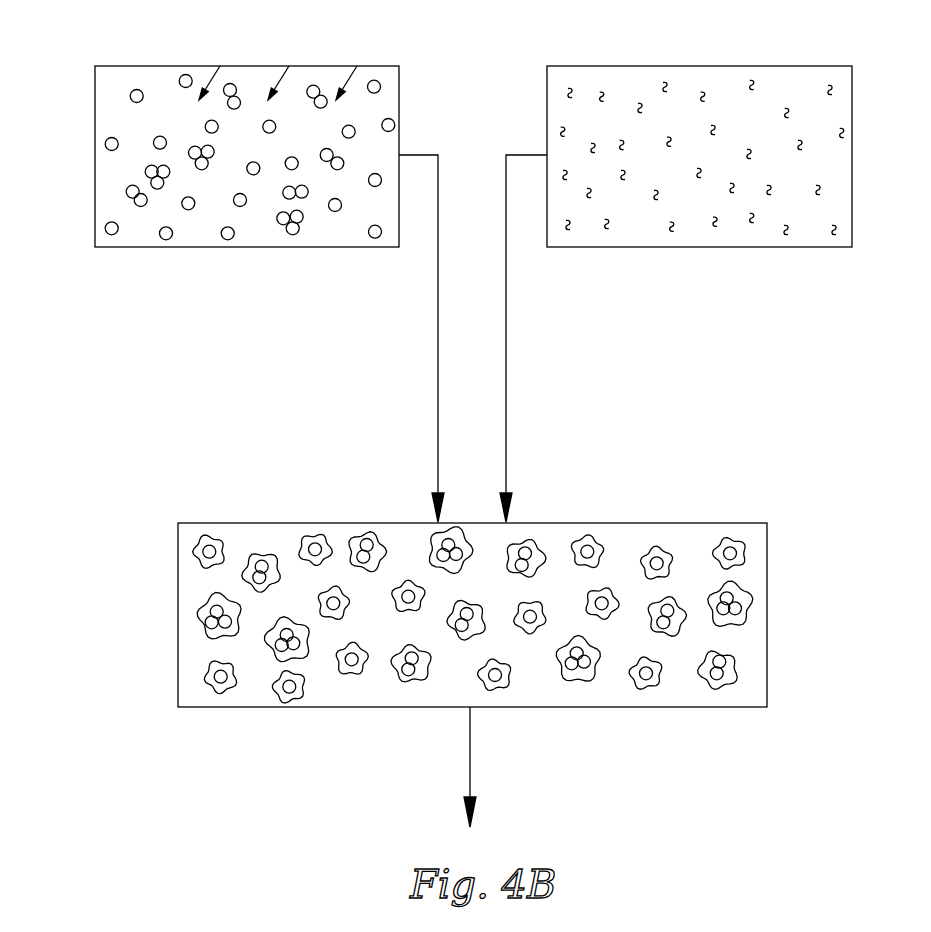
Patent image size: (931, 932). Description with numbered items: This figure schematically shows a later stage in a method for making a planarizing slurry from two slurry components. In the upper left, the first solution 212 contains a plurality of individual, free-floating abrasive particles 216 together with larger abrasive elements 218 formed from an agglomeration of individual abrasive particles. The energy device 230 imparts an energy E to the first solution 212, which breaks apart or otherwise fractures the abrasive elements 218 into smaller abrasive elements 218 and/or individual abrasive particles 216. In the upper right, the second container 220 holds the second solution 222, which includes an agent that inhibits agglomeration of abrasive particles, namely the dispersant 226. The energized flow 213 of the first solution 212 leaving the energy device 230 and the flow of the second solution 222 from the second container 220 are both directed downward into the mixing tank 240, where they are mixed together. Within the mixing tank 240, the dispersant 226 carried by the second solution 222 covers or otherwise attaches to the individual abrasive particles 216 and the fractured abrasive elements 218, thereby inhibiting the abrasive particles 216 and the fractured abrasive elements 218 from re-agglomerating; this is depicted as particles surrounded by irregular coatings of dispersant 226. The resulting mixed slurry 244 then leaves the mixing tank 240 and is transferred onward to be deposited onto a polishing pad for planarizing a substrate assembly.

The first solution 212 is at (117, 109).
The energized flow 213 is at (437, 340).
The abrasive particles 216 is at (353, 128).
The abrasive elements 218 is at (278, 225).
The second container 220 is at (772, 66).
The second solution 222 is at (568, 110).
The dispersant 226 is at (712, 224).
The energy device 230 is at (338, 66).
The mixing tank 240 is at (635, 523).
The mixed slurry 244 is at (198, 575).